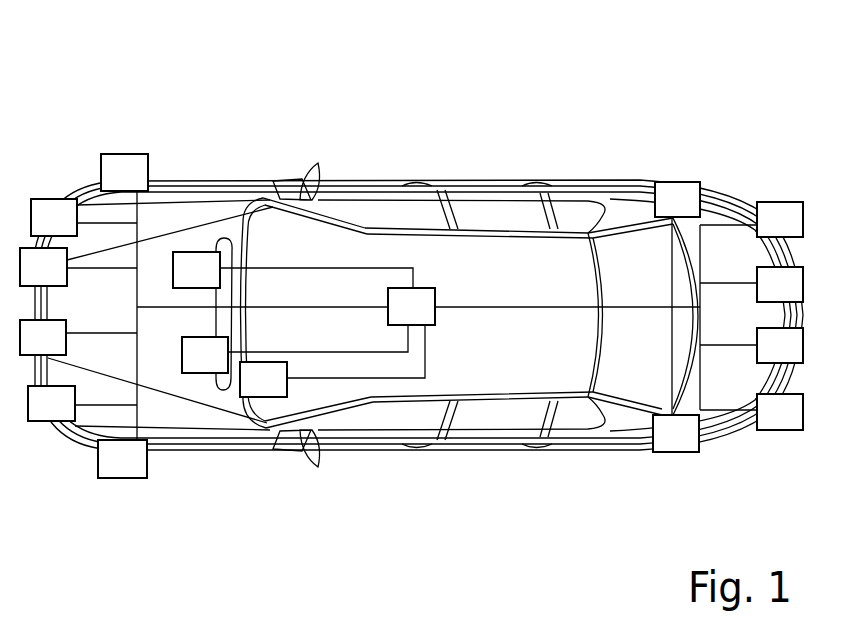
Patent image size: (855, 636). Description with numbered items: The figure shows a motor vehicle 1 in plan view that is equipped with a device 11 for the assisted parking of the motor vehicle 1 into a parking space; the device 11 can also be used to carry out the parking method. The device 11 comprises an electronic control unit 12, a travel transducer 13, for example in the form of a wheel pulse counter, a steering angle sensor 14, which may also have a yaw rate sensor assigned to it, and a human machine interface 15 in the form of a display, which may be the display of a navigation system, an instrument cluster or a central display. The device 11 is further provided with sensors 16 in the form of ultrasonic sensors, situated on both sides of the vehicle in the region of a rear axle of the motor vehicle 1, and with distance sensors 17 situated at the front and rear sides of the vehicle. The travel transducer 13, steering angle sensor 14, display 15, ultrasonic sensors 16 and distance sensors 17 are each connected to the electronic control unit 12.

The motor vehicle 1 is at (633, 127).
The device 11 is at (295, 268).
The electronic control unit 12 is at (411, 306).
The travel transducer 13 is at (205, 355).
The steering angle sensor 14 is at (196, 270).
The human machine interface 15 is at (263, 379).
The sensors 16 is at (676, 317).
The distance sensors 17 is at (411, 316).